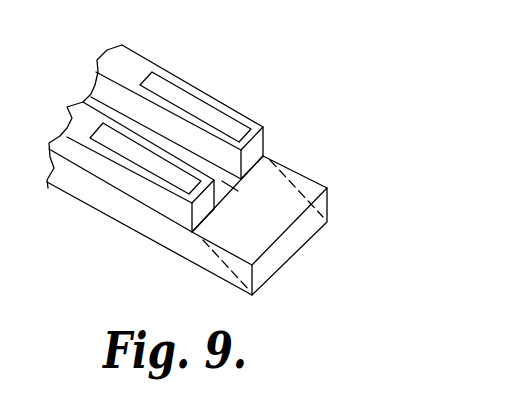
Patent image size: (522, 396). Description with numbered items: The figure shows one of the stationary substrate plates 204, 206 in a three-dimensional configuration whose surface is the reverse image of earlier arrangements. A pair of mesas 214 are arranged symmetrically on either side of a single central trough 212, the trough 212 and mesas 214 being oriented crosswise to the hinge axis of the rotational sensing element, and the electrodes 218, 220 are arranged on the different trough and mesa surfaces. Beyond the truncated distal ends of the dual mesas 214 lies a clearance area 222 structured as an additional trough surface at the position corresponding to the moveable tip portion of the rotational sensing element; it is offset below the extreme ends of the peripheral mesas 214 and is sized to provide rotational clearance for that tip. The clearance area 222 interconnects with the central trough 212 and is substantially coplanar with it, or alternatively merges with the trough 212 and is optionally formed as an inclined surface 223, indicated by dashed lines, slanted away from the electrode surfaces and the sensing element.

The substrate plate 204 is at (237, 179).
The substrate plate 206 is at (204, 168).
The trough 212 is at (270, 160).
The mesa 214 is at (266, 131).
The electrode 218 is at (178, 143).
The electrode 220 is at (180, 97).
The clearance area 222 is at (308, 183).
The inclined surface 223 is at (238, 274).